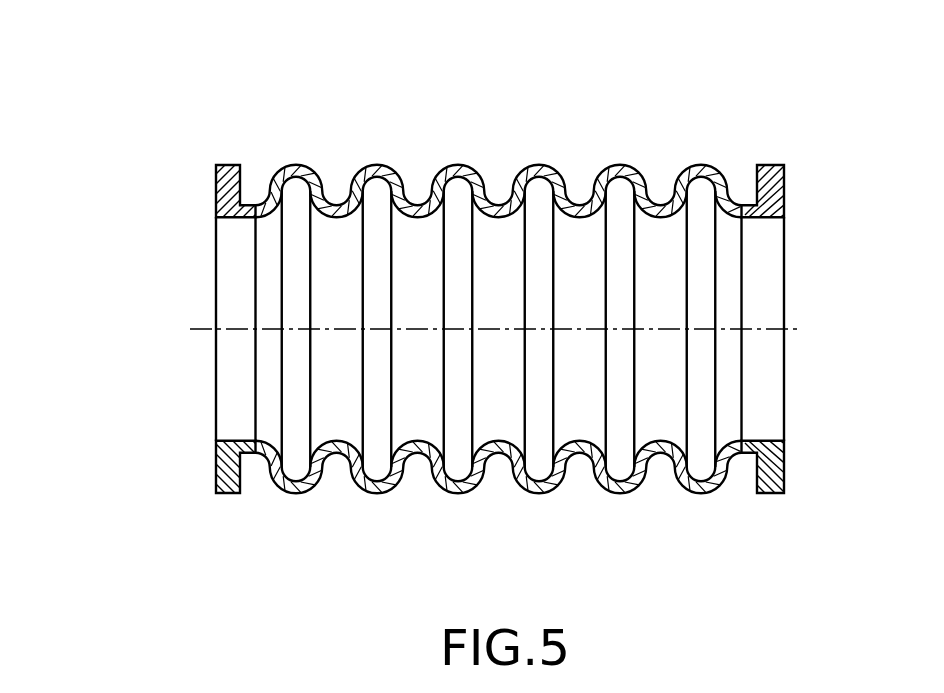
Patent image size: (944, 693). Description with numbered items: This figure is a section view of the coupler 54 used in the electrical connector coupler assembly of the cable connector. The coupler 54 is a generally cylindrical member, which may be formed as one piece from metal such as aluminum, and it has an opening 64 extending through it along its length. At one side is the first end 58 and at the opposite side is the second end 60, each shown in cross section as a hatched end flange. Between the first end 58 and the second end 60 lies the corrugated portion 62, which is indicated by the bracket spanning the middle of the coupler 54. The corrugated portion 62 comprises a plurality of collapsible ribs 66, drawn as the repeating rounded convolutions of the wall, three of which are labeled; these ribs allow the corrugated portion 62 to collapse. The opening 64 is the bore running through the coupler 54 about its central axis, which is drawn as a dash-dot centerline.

The coupler 54 is at (140, 63).
The first end 58 is at (786, 193).
The second end 60 is at (214, 195).
The corrugated portion 62 is at (752, 134).
The opening 64 is at (786, 372).
The collapsible ribs 66 is at (701, 494).